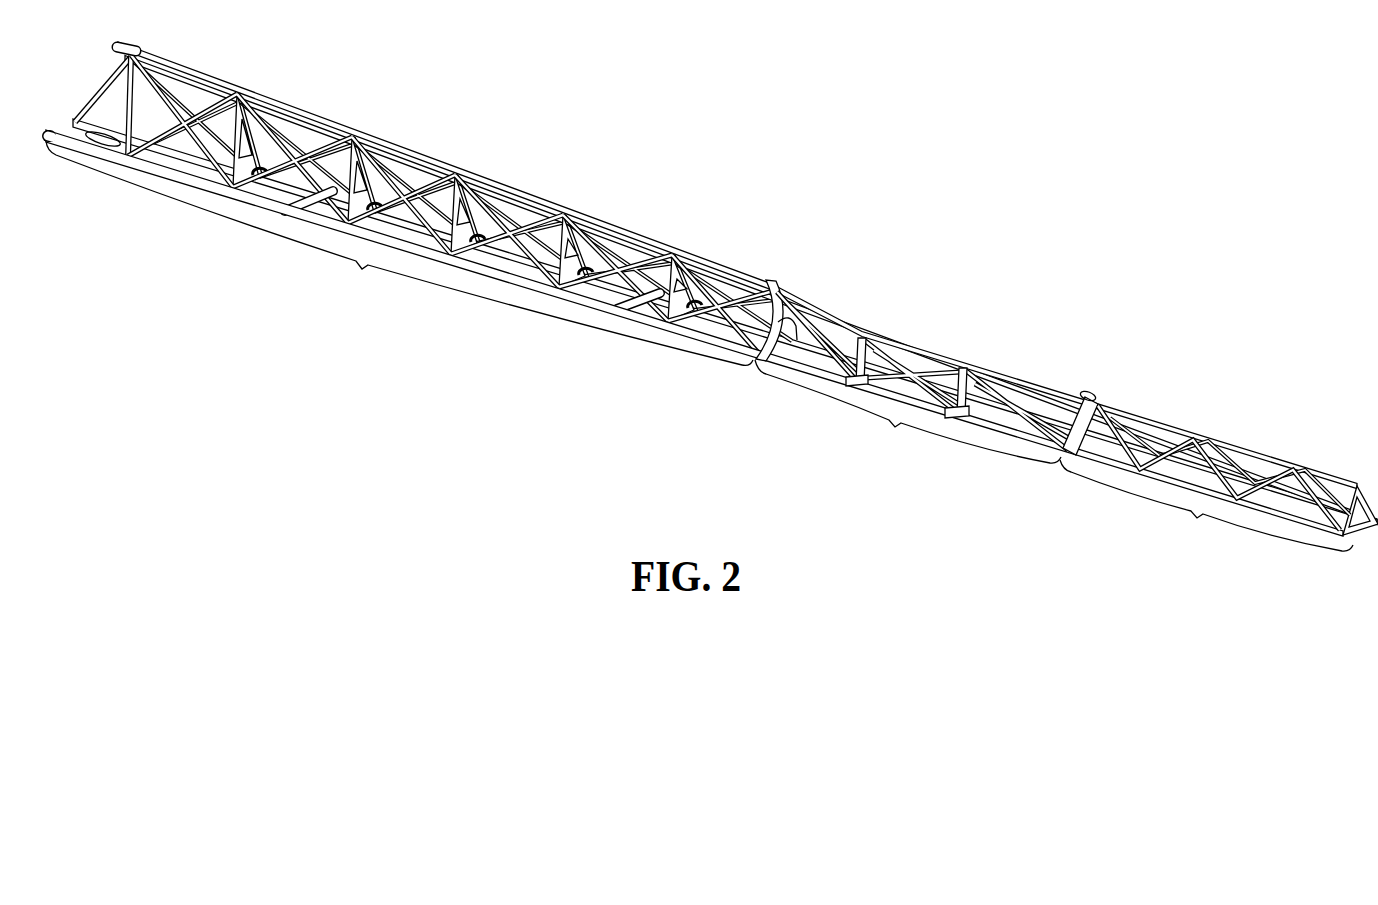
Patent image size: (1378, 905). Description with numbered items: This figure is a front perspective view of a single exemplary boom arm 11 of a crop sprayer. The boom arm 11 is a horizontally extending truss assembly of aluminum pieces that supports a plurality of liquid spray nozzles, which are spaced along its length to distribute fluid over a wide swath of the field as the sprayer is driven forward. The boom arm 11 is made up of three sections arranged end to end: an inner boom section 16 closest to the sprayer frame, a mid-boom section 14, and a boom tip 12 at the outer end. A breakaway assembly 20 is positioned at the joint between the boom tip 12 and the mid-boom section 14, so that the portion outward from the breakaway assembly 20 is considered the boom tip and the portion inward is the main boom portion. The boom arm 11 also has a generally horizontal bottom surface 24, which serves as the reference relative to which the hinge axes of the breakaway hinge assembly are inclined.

The boom arm 11 is at (712, 289).
The boom tip 12 is at (1206, 480).
The mid-boom section 14 is at (913, 380).
The inner boom section 16 is at (800, 178).
The breakaway assembly 20 is at (1086, 398).
The bottom surface 24 is at (691, 306).